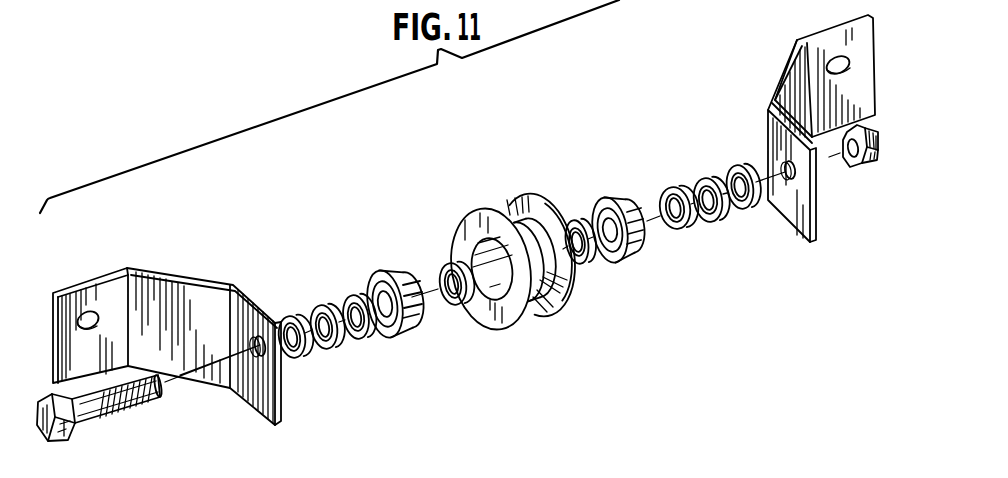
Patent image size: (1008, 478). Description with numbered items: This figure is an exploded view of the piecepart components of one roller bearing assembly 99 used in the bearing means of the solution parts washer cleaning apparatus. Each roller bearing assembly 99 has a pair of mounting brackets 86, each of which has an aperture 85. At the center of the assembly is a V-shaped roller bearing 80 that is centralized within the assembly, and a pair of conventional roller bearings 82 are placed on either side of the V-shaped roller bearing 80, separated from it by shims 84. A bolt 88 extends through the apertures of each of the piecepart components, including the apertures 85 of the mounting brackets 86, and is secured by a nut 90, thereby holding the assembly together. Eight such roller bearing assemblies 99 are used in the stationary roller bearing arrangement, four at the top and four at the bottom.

The V-shaped roller bearing 80 is at (506, 200).
The conventional roller bearings 82 is at (385, 270).
The shims 84 is at (317, 307).
The aperture 85 is at (93, 310).
The mounting brackets 86 is at (190, 288).
The bolt 88 is at (125, 407).
The nut 90 is at (868, 172).
The roller bearing assembly 99 is at (318, 173).